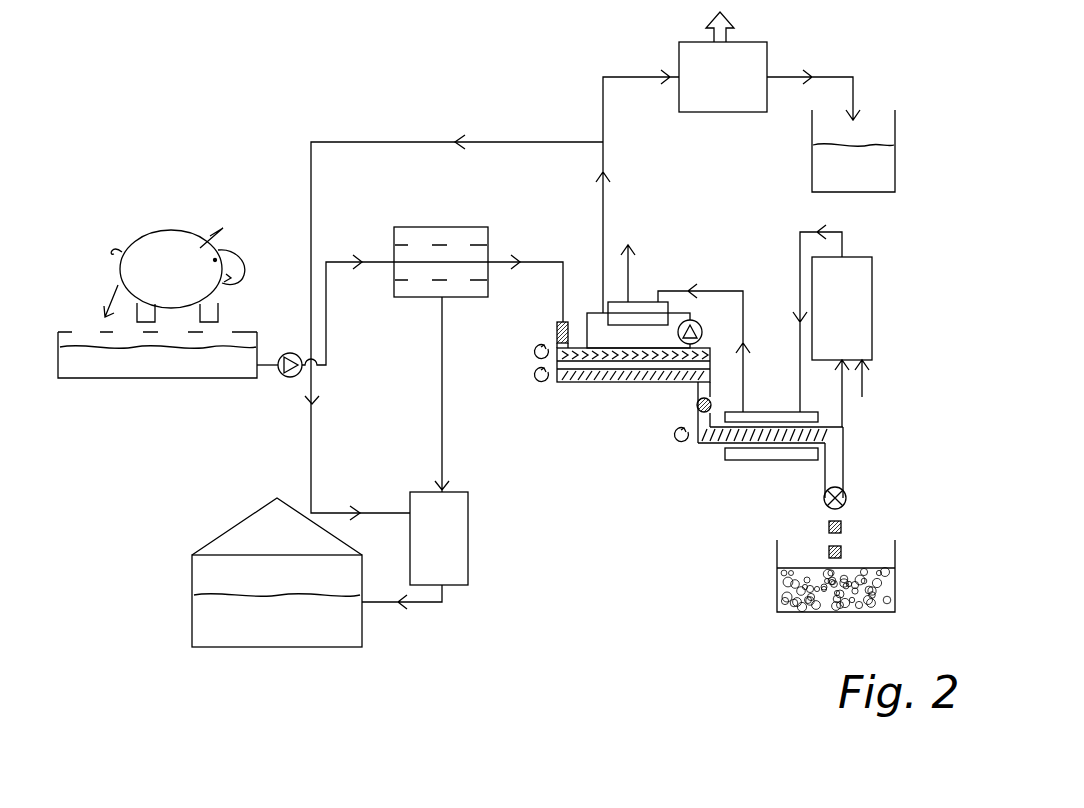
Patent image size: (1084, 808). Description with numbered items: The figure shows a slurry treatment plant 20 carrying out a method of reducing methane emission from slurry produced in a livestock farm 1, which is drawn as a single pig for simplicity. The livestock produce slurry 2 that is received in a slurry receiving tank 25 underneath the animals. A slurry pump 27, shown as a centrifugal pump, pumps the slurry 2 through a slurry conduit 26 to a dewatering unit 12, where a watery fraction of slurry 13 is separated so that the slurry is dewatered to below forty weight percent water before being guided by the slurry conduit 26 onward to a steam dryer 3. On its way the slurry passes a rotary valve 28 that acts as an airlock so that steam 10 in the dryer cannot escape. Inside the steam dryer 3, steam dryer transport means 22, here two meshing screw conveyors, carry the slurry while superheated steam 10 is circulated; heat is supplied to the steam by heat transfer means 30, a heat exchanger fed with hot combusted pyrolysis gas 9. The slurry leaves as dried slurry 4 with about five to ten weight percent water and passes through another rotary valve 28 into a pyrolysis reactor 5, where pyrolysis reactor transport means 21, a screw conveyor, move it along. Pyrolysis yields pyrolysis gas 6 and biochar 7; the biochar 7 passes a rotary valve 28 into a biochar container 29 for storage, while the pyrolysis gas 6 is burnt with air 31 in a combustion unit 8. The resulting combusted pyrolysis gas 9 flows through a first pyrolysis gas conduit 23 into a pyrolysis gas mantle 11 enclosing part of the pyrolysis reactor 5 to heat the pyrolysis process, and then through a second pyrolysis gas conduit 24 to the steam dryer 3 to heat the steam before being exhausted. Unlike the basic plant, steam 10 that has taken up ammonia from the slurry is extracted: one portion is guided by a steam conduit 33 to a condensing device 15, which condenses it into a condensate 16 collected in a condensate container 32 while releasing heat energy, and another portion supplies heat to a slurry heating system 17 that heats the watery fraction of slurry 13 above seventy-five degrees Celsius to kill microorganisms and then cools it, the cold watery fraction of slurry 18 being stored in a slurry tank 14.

The livestock farm 1 is at (78, 166).
The slurry 2 is at (76, 365).
The steam dryer 3 is at (615, 410).
The dried slurry 4 is at (710, 400).
The pyrolysis reactor 5 is at (712, 447).
The pyrolysis gas 6 is at (846, 418).
The biochar 7 is at (846, 527).
The combustion unit 8 is at (872, 315).
The combusted pyrolysis gas 9 is at (842, 245).
The steam 10 is at (311, 445).
The pyrolysis gas mantle 11 is at (780, 412).
The dewatering unit 12 is at (440, 227).
The watery fraction of slurry 13 is at (442, 402).
The slurry tank 14 is at (192, 572).
The condensing device 15 is at (695, 112).
The condensate 16 is at (820, 145).
The slurry heating system 17 is at (468, 545).
The cold watery fraction of slurry 18 is at (440, 657).
The slurry treatment plant 20 is at (267, 139).
The pyrolysis reactor transport means 21 is at (700, 447).
The steam dryer transport means 22 is at (562, 385).
The first pyrolysis gas conduit 23 is at (817, 318).
The second pyrolysis gas conduit 24 is at (725, 290).
The slurry receiving tank 25 is at (153, 378).
The slurry conduit 26 is at (372, 255).
The slurry pump 27 is at (293, 377).
The rotary valve 28 is at (557, 328).
The biochar container 29 is at (777, 578).
The heat transfer means 30 is at (645, 302).
The air 31 is at (865, 382).
The condensate container 32 is at (812, 190).
The steam conduit 33 is at (603, 100).